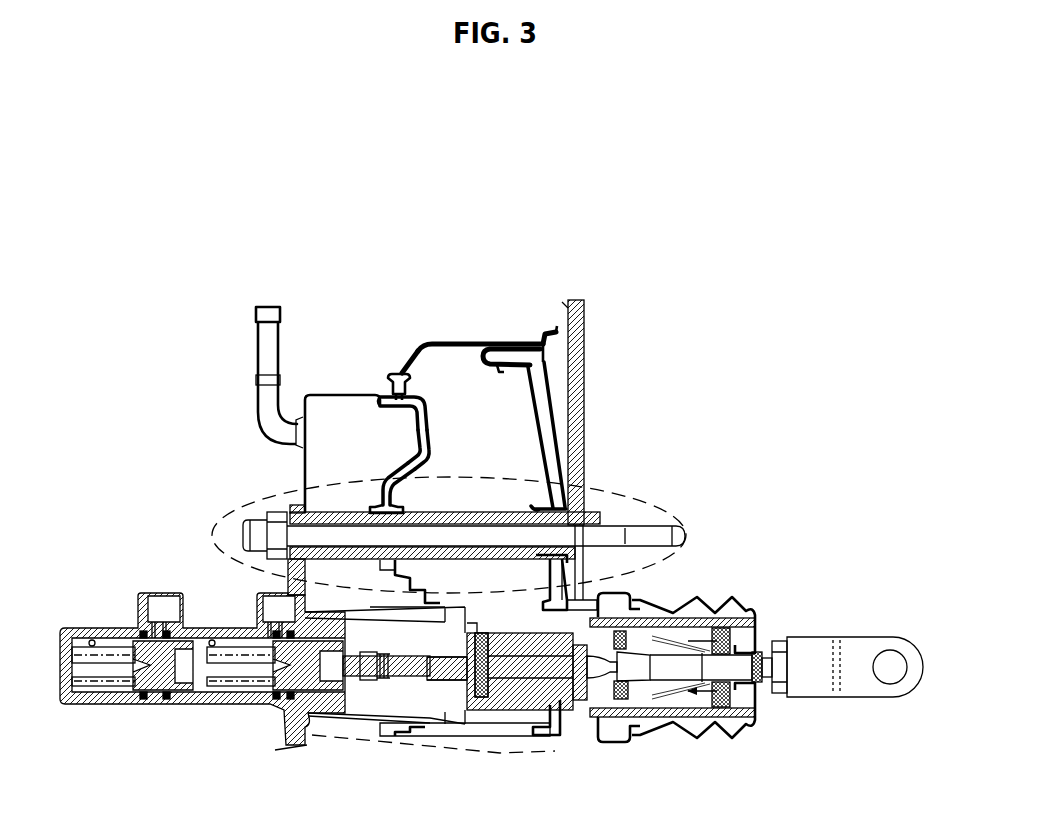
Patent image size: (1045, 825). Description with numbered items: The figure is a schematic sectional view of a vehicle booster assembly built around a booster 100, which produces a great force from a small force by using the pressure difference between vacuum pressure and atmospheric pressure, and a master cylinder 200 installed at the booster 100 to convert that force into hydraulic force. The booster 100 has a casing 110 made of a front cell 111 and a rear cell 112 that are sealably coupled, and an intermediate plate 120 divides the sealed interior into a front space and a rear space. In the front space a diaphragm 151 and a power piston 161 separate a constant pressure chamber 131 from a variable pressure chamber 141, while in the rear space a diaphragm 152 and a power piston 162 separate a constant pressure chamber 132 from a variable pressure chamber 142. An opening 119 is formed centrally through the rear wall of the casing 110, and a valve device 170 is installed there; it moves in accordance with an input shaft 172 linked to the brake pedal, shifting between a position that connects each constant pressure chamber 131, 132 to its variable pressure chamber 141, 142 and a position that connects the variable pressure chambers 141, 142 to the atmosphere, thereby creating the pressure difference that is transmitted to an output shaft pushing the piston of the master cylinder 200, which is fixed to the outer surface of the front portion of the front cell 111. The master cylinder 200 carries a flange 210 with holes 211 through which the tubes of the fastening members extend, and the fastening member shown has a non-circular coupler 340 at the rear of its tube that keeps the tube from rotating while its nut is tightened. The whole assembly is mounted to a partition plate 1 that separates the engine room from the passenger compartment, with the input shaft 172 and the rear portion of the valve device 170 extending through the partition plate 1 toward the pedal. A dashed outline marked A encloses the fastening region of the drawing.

The partition plate 1 is at (584, 379).
The booster 100 is at (373, 268).
The casing 110 is at (436, 334).
The front cell 111 is at (305, 474).
The rear cell 112 is at (559, 425).
The opening 119 is at (596, 615).
The intermediate plate 120 is at (436, 417).
The constant pressure chamber 131 is at (333, 416).
The constant pressure chamber 132 is at (460, 384).
The variable pressure chamber 141 is at (411, 405).
The variable pressure chamber 142 is at (512, 350).
The diaphragm 151 is at (384, 410).
The diaphragm 152 is at (497, 364).
The power piston 161 is at (358, 478).
The power piston 162 is at (541, 450).
The valve device 170 is at (646, 621).
The input shaft 172 is at (800, 722).
The master cylinder 200 is at (213, 607).
The flange 210 is at (290, 582).
The holes 211 is at (270, 512).
The non-circular coupler 340 is at (573, 532).
The region A is at (670, 520).